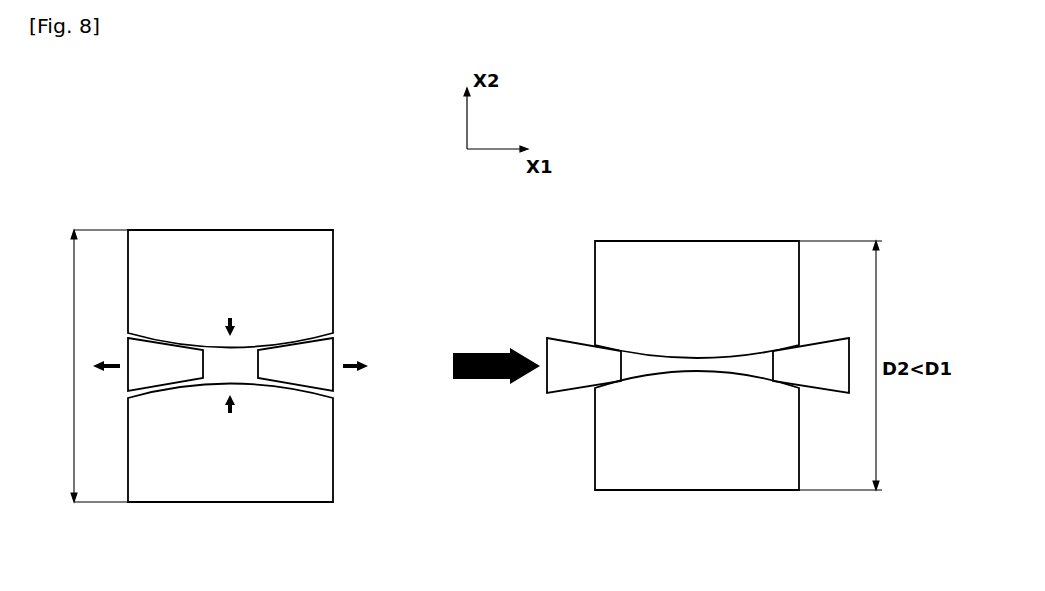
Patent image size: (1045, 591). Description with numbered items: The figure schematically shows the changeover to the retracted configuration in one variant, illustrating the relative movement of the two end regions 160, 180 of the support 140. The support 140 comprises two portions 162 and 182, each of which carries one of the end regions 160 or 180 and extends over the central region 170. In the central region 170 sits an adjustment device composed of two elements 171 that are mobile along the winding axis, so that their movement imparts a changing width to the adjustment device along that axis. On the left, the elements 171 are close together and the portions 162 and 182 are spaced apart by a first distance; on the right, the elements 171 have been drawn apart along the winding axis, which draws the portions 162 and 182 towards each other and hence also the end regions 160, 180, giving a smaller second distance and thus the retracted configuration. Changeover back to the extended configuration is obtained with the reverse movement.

The support 140 is at (349, 228).
The end region 160 is at (233, 503).
The portion 162 is at (250, 450).
The central region 170 is at (498, 379).
The element 171 is at (350, 387).
The end region 180 is at (237, 229).
The portion 182 is at (250, 305).